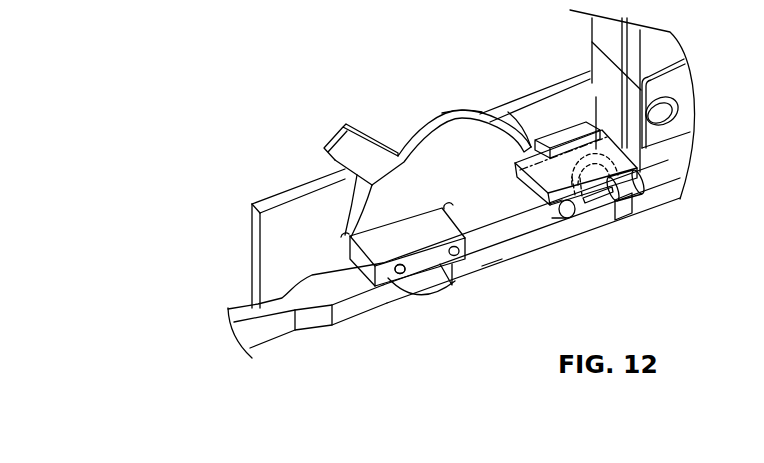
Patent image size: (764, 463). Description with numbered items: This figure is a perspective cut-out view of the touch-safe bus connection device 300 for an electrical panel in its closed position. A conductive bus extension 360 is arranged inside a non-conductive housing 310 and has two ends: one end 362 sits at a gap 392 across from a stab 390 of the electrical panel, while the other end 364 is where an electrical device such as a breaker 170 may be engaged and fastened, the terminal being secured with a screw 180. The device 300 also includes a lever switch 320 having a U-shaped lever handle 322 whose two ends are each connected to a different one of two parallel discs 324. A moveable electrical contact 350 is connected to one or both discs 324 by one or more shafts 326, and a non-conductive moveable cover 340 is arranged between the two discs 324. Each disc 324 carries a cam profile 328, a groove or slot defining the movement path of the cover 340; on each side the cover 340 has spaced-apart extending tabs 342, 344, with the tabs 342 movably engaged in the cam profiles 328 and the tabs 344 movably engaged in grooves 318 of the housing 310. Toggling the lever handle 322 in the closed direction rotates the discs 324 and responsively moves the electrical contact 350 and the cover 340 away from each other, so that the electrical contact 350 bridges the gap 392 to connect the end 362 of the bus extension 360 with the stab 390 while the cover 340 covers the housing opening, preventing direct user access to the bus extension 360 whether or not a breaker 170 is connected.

The breaker 170 is at (658, 47).
The screw 180 is at (621, 156).
The touch-safe bus connection device 300 is at (304, 24).
The non-conductive housing 310 is at (283, 194).
The grooves 318 is at (527, 130).
The lever switch 320 is at (388, 99).
The lever handle 322 is at (338, 147).
The discs 324 is at (459, 110).
The shafts 326 is at (398, 275).
The cam profile 328 is at (430, 146).
The moveable cover 340 is at (561, 146).
The tabs 342 is at (530, 260).
The tabs 344 is at (641, 193).
The moveable electrical contact 350 is at (383, 232).
The conductive bus extension 360 is at (528, 267).
The end of the bus extension 362 is at (461, 268).
The end of the bus extension 364 is at (618, 212).
The stab 390 is at (246, 319).
The gap 392 is at (434, 294).